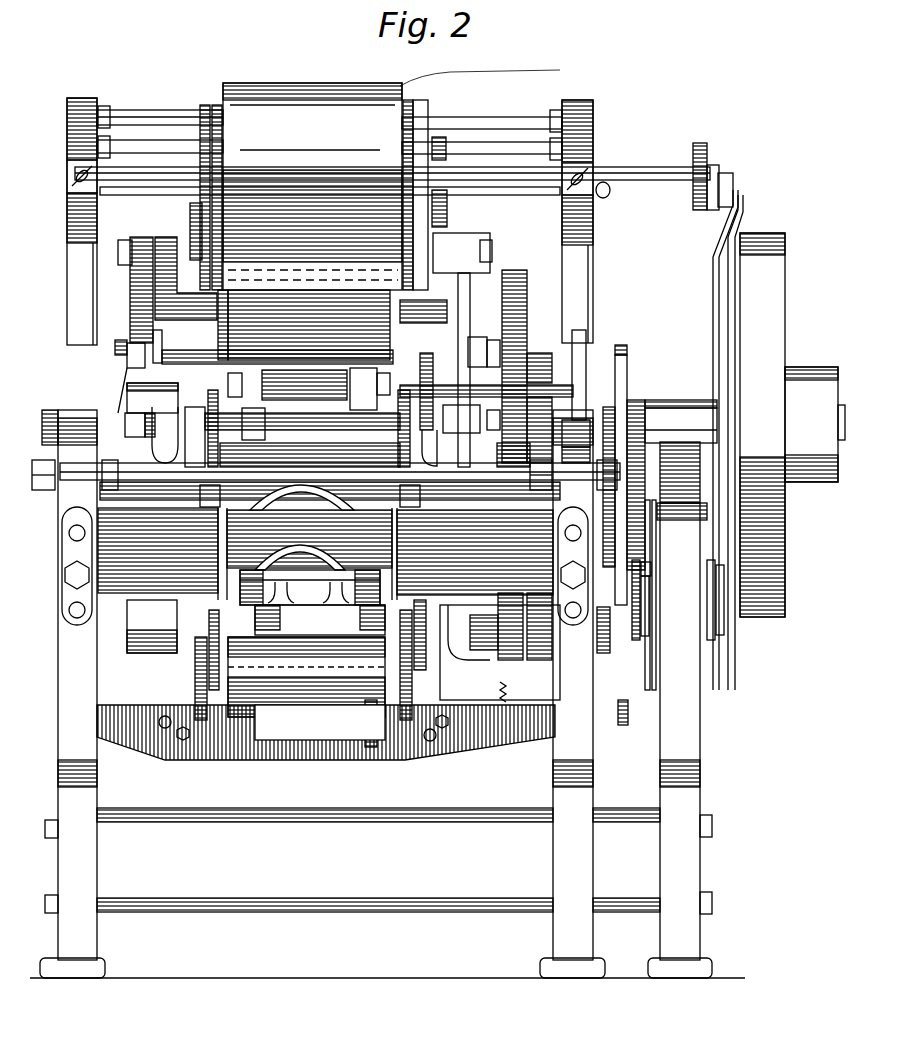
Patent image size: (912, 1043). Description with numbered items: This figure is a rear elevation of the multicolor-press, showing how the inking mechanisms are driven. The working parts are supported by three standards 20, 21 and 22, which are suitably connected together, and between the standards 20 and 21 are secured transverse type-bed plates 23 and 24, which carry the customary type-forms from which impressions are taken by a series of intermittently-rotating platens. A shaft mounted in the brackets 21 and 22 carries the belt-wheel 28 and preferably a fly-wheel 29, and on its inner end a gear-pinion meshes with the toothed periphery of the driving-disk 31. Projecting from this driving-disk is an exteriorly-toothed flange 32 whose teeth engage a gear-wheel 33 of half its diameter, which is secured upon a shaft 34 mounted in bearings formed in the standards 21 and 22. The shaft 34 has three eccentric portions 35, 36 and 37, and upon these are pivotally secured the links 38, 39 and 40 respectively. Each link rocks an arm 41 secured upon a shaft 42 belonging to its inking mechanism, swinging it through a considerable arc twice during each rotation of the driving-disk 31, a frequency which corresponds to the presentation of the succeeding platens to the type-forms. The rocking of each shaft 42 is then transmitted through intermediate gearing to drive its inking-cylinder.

The standard 20 is at (72, 694).
The standard 21 is at (572, 694).
The standard 22 is at (680, 740).
The type-bed plate 23 is at (325, 545).
The type-bed plate 24 is at (484, 752).
The belt-wheel 28 is at (815, 424).
The fly-wheel 29 is at (773, 320).
The driving-disk 31 is at (503, 303).
The exteriorly-toothed flange 32 is at (520, 305).
The gear-wheel 33 is at (512, 630).
The shaft 34 is at (712, 598).
The eccentric portion 35 is at (566, 626).
The eccentric portion 36 is at (650, 575).
The eccentric portion 37 is at (650, 615).
The link 38 is at (628, 392).
The link 39 is at (310, 673).
The link 40 is at (648, 690).
The arm 41 is at (622, 348).
The shaft 42 is at (600, 360).